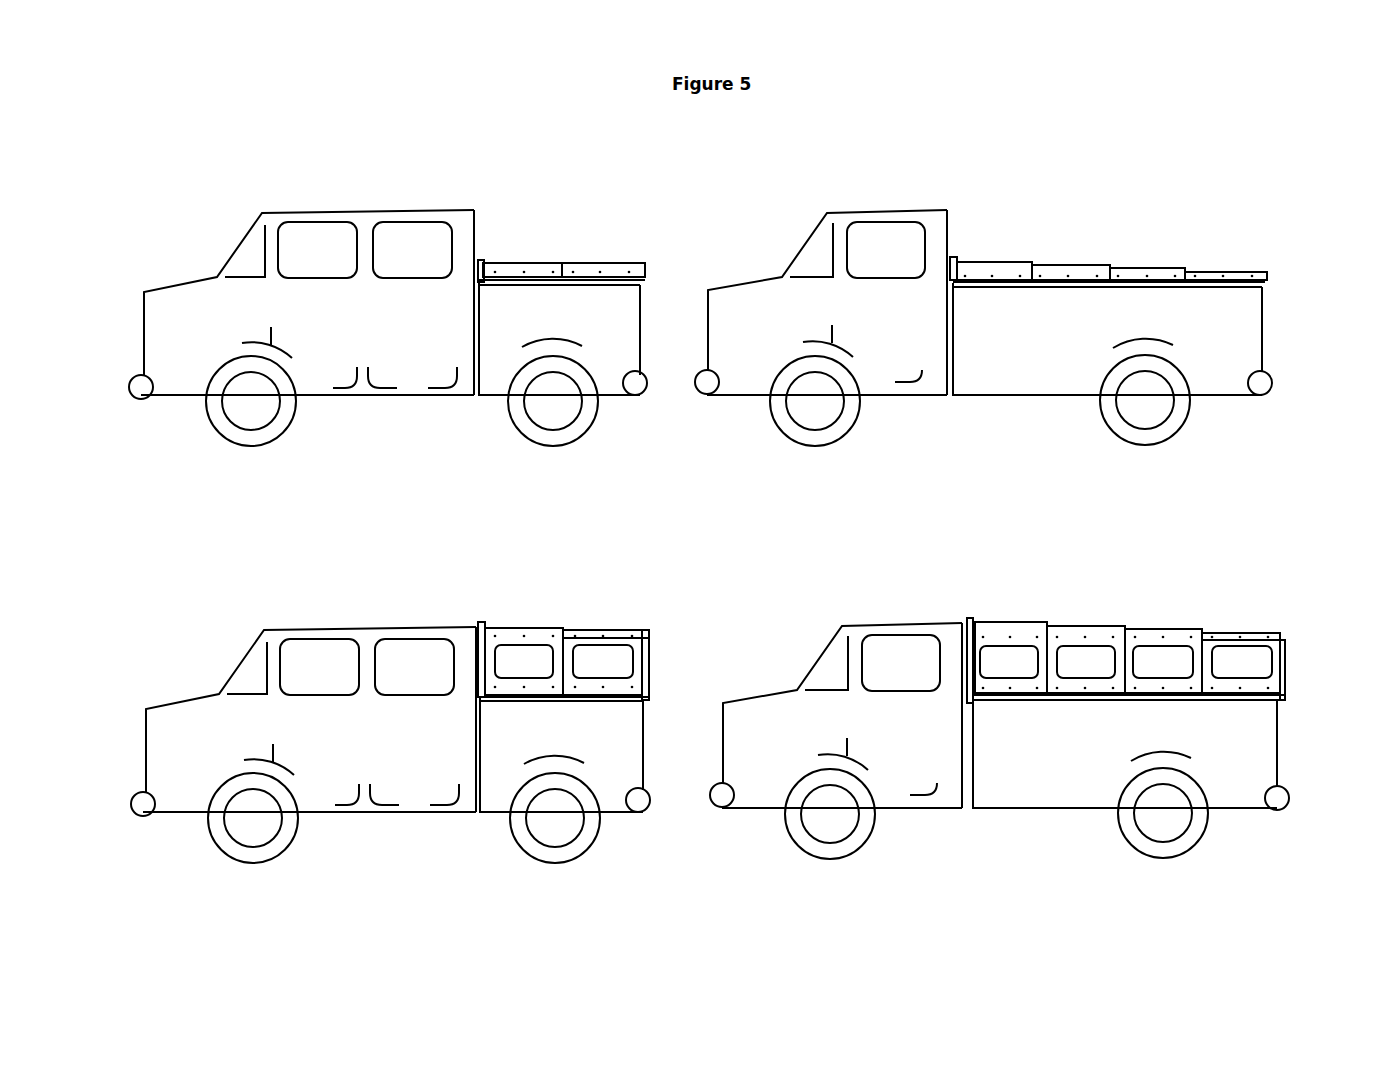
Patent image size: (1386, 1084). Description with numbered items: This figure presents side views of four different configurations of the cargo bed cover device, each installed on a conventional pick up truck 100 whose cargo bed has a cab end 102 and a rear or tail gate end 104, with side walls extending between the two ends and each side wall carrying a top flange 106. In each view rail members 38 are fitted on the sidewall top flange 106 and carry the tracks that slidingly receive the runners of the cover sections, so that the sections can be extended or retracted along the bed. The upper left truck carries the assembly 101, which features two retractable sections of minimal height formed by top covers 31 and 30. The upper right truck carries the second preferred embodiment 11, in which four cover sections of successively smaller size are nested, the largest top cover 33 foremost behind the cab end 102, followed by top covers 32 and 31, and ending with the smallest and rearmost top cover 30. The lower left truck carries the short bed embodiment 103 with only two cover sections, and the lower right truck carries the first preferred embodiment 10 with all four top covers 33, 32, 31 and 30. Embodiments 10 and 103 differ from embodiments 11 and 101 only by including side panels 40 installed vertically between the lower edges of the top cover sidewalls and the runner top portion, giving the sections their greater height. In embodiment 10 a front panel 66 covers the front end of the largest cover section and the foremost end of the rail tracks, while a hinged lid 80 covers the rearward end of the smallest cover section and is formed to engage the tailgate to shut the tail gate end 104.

The first preferred embodiment device 10 is at (1053, 573).
The second preferred embodiment device 11 is at (1048, 200).
The assembly with two retractable sections of minimal height 101 is at (504, 180).
The short bed embodiment with two cover sections 103 is at (507, 592).
The top cover 30 is at (600, 263).
The top cover 31 is at (520, 263).
The top cover 32 is at (1075, 265).
The top cover 33 is at (990, 262).
The rail member 38 is at (1250, 283).
The side panel 40 is at (638, 650).
The front panel 66 is at (970, 618).
The hinged lid 80 is at (648, 657).
The pick up truck 100 is at (181, 318).
The cab end 102 is at (475, 343).
The tail gate end 104 is at (640, 290).
The top flange 106 is at (552, 283).